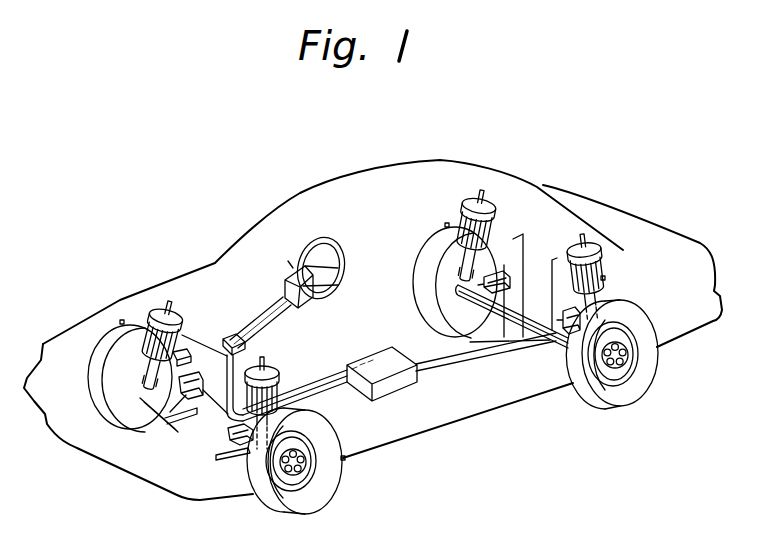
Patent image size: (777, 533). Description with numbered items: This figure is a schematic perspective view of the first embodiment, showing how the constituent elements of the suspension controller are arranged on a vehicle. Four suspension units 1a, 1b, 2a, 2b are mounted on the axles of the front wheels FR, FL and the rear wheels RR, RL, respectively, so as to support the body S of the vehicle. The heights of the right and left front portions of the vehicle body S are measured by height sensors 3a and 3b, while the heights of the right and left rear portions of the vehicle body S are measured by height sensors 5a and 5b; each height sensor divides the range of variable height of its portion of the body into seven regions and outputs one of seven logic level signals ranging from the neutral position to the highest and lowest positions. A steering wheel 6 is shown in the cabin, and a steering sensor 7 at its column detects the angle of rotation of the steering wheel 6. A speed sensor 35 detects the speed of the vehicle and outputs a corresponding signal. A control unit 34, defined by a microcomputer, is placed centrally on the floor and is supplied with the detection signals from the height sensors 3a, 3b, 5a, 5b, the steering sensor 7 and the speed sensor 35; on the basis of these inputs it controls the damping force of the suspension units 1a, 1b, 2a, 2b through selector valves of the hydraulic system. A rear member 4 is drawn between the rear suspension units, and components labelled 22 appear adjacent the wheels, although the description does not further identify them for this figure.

The vehicle body S is at (352, 185).
The front right wheel FR is at (98, 352).
The front left wheel FL is at (313, 487).
The rear right wheel RR is at (427, 265).
The rear left wheel RL is at (635, 383).
The suspension unit 1a is at (157, 316).
The suspension unit 1b is at (250, 422).
The suspension unit 2a is at (474, 192).
The suspension unit 2b is at (588, 242).
The height sensor 3a is at (200, 374).
The height sensor 3b is at (230, 428).
The rear axle beam 4 is at (553, 345).
The height sensor 5a is at (506, 272).
The height sensor 5b is at (567, 383).
The steering wheel 6 is at (308, 238).
The steering sensor 7 is at (232, 333).
The vertical acceleration sensor 22 is at (122, 322).
The control unit 34 is at (408, 393).
The speed sensor 35 is at (186, 360).